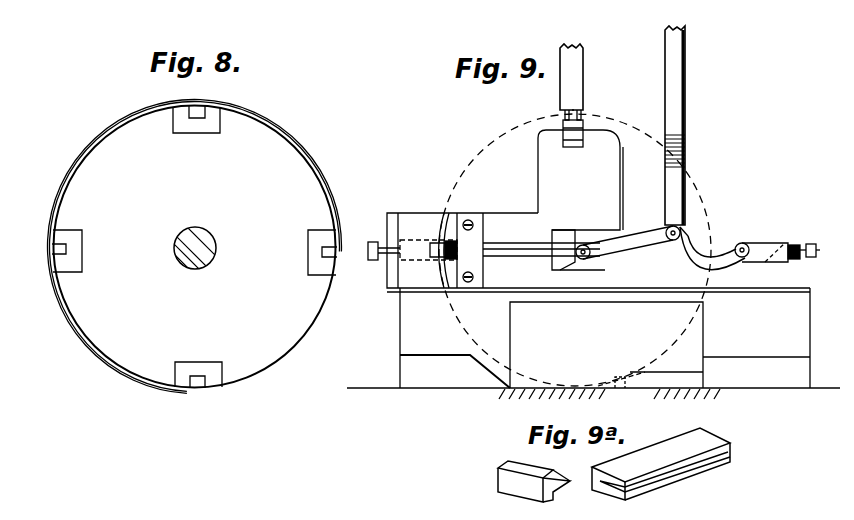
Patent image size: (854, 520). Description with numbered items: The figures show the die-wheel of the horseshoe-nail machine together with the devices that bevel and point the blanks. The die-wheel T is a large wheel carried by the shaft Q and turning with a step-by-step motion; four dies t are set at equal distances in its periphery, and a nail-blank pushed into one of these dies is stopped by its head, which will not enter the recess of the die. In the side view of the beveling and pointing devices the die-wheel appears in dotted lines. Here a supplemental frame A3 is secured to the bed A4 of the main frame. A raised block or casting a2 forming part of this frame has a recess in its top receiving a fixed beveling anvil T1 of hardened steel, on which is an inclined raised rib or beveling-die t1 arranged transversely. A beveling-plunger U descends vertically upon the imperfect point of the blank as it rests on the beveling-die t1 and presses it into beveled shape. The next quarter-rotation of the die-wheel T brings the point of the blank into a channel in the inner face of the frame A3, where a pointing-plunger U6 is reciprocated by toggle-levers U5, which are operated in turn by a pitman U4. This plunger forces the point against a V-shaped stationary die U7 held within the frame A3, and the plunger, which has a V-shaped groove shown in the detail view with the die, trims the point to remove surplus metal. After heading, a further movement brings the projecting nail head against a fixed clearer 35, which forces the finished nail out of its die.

In FIG. 8, the die-wheel T is at (194, 246).
In FIG. 8, the shaft Q is at (213, 262).
In FIG. 8, the die t is at (213, 383).
In FIG. 9, the supplemental frame A3 is at (417, 226).
In FIG. 9, the bed A4 is at (444, 213).
In FIG. 9, the V-shaped stationary die U7 is at (432, 272).
In FIG. 9, the pointing-plunger U6 is at (520, 258).
In FIG. 9a, the pointing-plunger U6 is at (661, 464).
In FIG. 9, the raised block a2 is at (580, 200).
In FIG. 9, the beveling-die t1 is at (565, 116).
In FIG. 9, the beveling anvil T1 is at (580, 116).
In FIG. 9, the beveling-plunger U is at (583, 70).
In FIG. 9, the pitman U4 is at (685, 93).
In FIG. 9a, the pitman U4 is at (485, 452).
In FIG. 9, the toggle-levers U5 is at (660, 226).
In FIG. 9, the fixed clearer 35 is at (634, 380).